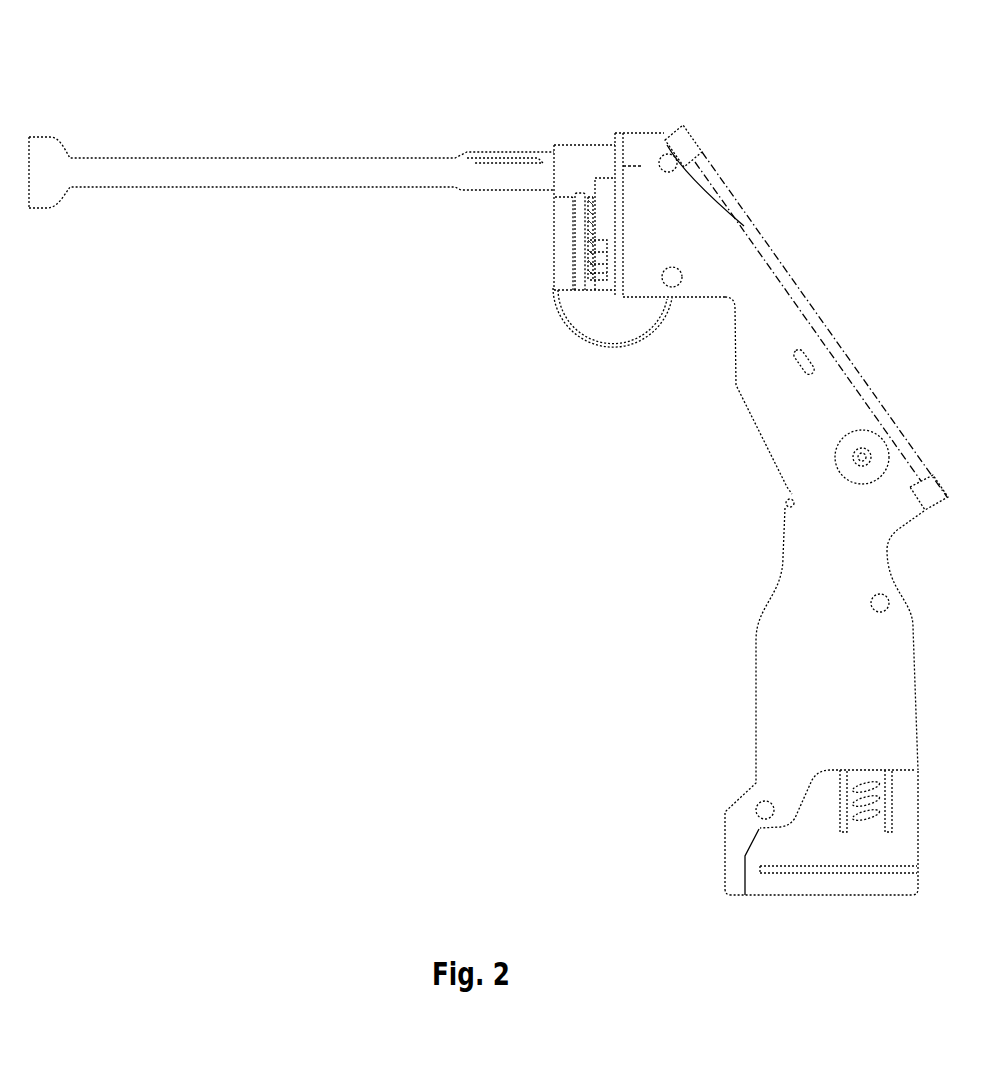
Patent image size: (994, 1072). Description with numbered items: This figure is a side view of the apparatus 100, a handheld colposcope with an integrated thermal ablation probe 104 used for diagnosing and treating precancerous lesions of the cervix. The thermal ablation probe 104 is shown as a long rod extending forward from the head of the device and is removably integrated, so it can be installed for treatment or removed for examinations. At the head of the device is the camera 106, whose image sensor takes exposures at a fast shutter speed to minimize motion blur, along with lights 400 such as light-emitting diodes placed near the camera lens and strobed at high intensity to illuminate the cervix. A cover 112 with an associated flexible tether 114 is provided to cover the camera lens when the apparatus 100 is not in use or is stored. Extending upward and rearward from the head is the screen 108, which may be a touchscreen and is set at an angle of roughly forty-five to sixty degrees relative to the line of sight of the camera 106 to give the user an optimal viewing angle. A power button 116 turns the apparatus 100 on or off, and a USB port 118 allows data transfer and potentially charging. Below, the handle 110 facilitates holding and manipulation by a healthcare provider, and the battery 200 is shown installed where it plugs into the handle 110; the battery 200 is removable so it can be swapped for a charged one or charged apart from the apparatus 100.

The apparatus 100 is at (802, 67).
The thermal ablation probe 104 is at (320, 173).
The camera 106 is at (597, 281).
The screen 108 is at (798, 292).
The handle 110 is at (852, 687).
The cover 112 is at (562, 242).
The flexible tether 114 is at (615, 343).
The power button 116 is at (868, 452).
The USB port 118 is at (806, 360).
The battery 200 is at (852, 858).
The lights 400 is at (601, 185).